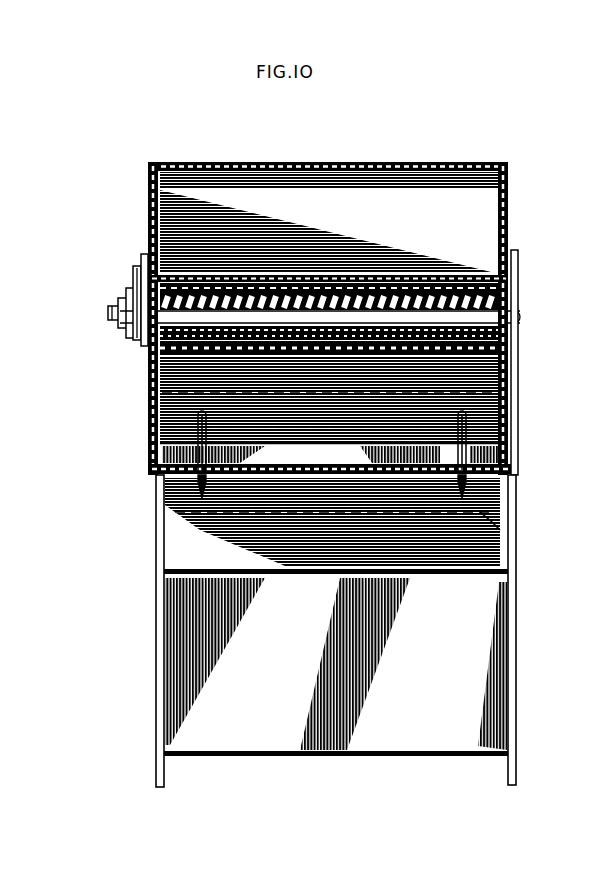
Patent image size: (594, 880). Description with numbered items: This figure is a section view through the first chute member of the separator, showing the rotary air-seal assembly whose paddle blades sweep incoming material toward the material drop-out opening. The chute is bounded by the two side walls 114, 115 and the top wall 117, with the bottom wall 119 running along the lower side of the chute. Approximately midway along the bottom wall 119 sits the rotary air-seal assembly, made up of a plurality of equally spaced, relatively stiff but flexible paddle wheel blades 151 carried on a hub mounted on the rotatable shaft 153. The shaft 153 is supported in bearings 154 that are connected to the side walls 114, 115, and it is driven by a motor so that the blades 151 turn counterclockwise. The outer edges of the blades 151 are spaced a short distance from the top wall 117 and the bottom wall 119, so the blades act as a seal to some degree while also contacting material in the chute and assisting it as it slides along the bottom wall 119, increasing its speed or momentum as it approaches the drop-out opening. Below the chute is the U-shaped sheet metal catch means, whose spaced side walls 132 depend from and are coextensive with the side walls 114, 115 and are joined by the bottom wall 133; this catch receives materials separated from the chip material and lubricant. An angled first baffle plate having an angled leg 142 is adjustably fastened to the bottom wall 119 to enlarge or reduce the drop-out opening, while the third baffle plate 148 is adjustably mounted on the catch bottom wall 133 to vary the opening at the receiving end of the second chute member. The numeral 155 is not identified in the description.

The side wall 114 is at (512, 240).
The side wall 115 is at (148, 202).
The top wall 117 is at (302, 162).
The bottom wall 119 is at (245, 476).
The side walls 132 is at (516, 690).
The bottom wall 133 is at (283, 742).
The angled leg 142 is at (500, 556).
The third baffle plate 148 is at (500, 530).
The paddle wheel blades 151 is at (490, 200).
The rotatable shaft 153 is at (110, 318).
The bearings 154 is at (141, 286).
The frame cross members 155 is at (512, 377).